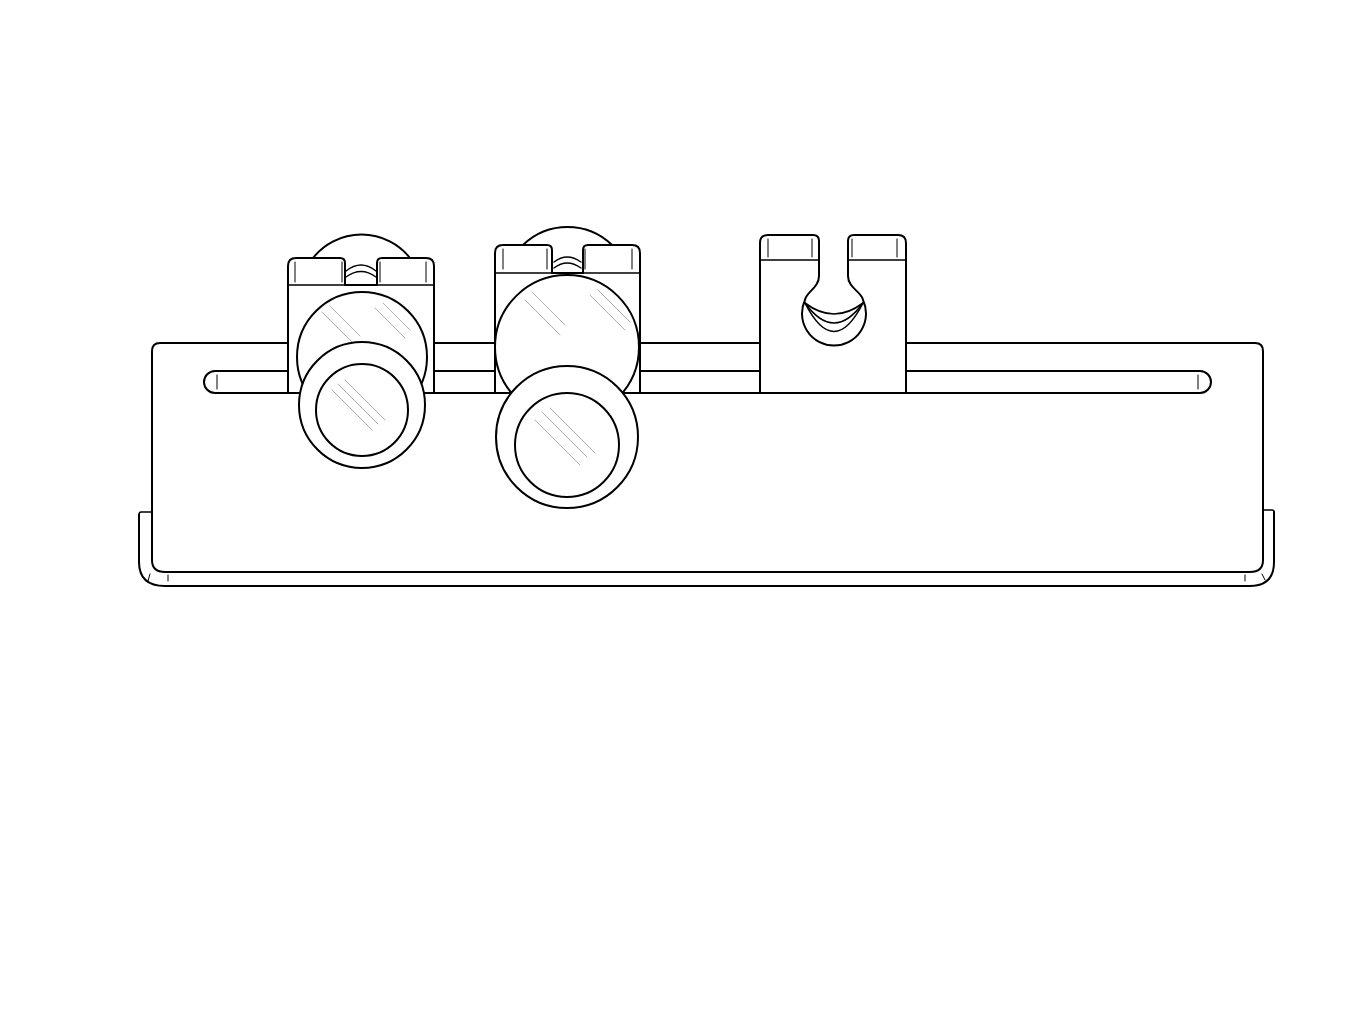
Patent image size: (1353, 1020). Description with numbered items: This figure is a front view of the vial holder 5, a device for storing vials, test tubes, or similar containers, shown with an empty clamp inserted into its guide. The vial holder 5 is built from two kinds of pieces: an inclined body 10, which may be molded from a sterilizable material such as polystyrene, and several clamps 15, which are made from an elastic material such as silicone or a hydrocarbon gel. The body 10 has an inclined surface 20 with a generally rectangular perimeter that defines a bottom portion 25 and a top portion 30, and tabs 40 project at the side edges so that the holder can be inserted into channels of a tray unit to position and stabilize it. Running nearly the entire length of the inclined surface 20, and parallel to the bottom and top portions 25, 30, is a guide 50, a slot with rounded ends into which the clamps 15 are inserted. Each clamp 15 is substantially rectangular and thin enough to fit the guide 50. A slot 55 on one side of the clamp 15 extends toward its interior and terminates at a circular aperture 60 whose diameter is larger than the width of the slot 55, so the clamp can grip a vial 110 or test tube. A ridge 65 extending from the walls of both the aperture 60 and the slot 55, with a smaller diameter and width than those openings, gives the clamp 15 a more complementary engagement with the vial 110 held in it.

The vial holder 5 is at (140, 185).
The inclined body 10 is at (963, 507).
The clamp 15 is at (297, 298).
The inclined surface 20 is at (431, 535).
The bottom portion 25 is at (703, 586).
The top portion 30 is at (175, 355).
The tab 40 is at (1277, 541).
The guide 50 is at (1190, 378).
The slot 55 is at (835, 242).
The aperture 60 is at (843, 340).
The ridge 65 is at (815, 330).
The vial 110 is at (598, 349).